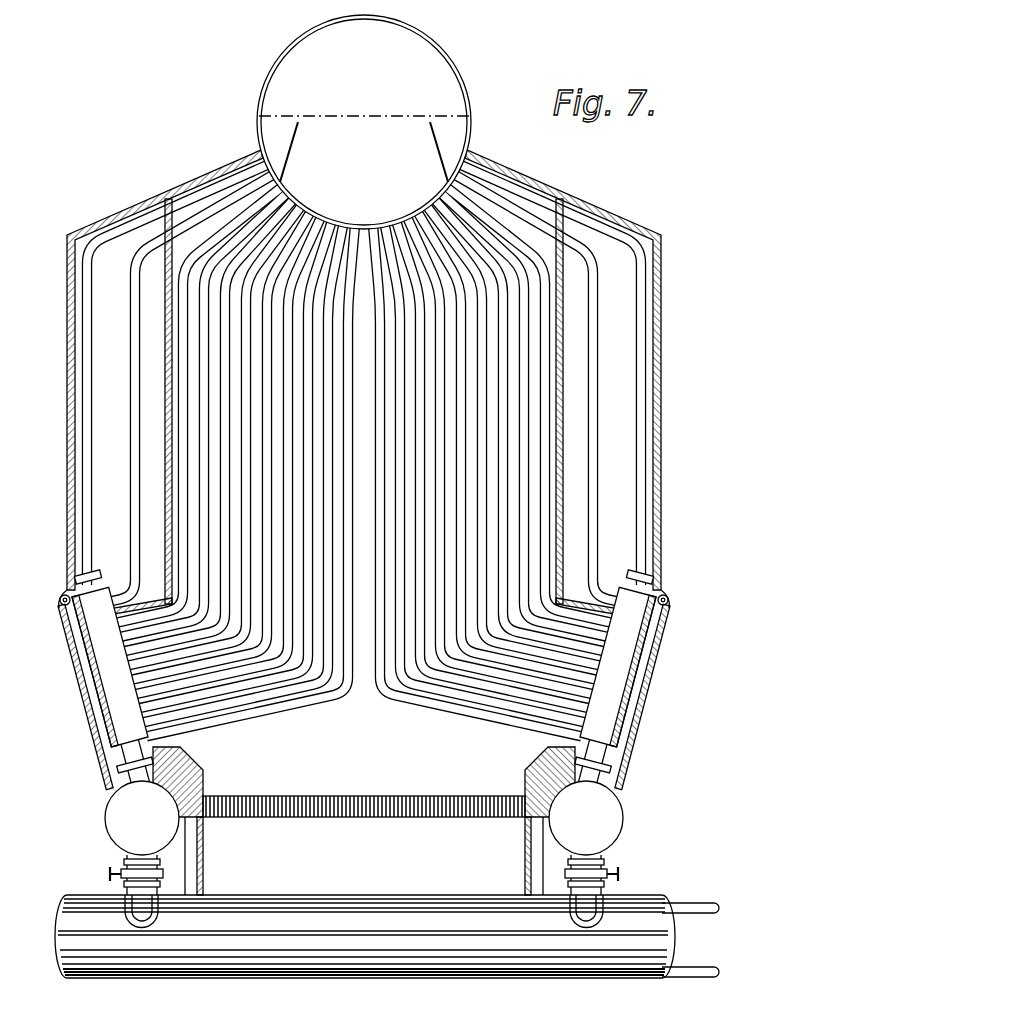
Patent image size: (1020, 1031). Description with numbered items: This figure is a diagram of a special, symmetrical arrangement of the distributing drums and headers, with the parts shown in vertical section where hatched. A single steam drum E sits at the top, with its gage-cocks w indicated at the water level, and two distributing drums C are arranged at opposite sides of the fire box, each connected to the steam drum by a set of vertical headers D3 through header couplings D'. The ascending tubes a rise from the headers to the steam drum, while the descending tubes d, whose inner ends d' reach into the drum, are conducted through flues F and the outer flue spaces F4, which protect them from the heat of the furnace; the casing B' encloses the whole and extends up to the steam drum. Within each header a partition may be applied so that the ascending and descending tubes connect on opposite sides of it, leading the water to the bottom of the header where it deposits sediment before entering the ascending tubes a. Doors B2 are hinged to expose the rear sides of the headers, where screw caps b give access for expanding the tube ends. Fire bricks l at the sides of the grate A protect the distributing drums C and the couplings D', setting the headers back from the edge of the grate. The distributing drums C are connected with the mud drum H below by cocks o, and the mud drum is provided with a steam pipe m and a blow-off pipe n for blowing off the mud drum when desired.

The steam drum E is at (364, 122).
The gage-cocks w is at (364, 103).
The partition d' is at (364, 152).
The descending tubes d is at (362, 371).
The casing B' is at (371, 379).
The outer water tubes F4 is at (364, 382).
The flues F is at (166, 466).
The ascending tubes a is at (364, 463).
The inclined header D3 is at (683, 650).
The doors B2 is at (94, 724).
The screw caps b is at (633, 733).
The header couplings D' is at (386, 765).
The fire bricks l is at (200, 774).
The grate A is at (364, 793).
The distributing drums C is at (106, 823).
The cocks o is at (622, 876).
The mud drum H is at (415, 931).
The steam pipe m is at (690, 894).
The blow-off pipe n is at (690, 956).